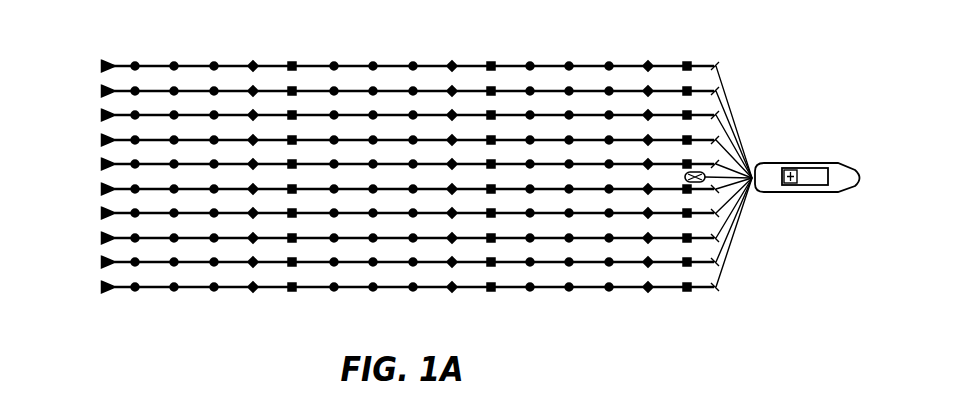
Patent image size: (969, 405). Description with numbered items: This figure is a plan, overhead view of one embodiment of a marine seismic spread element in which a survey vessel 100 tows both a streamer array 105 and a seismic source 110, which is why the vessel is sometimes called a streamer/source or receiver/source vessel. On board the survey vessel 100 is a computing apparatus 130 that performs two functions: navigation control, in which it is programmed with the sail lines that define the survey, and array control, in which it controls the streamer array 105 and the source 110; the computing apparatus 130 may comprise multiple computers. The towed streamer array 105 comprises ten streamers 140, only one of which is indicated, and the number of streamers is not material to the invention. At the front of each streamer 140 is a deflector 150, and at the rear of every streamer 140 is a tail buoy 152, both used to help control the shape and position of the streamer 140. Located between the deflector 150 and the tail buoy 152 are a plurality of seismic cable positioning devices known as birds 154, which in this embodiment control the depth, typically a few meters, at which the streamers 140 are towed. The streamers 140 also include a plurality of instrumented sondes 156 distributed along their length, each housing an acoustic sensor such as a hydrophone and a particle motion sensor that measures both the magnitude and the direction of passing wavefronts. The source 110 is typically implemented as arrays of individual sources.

The survey vessel 100 is at (802, 163).
The streamer array 105 is at (71, 55).
The seismic source 110 is at (685, 177).
The computing apparatus 130 is at (797, 180).
The streamer 140 is at (309, 63).
The deflector 150 is at (720, 65).
The tail buoy 152 is at (108, 61).
The bird 154 is at (683, 62).
The instrumented sonde 156 is at (566, 62).